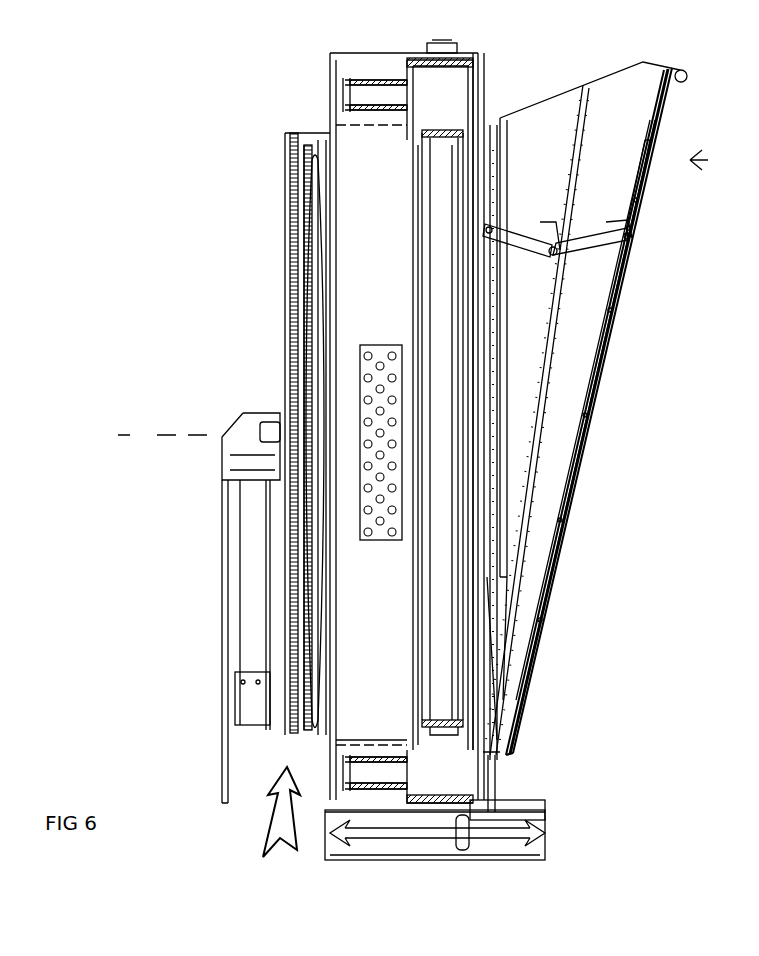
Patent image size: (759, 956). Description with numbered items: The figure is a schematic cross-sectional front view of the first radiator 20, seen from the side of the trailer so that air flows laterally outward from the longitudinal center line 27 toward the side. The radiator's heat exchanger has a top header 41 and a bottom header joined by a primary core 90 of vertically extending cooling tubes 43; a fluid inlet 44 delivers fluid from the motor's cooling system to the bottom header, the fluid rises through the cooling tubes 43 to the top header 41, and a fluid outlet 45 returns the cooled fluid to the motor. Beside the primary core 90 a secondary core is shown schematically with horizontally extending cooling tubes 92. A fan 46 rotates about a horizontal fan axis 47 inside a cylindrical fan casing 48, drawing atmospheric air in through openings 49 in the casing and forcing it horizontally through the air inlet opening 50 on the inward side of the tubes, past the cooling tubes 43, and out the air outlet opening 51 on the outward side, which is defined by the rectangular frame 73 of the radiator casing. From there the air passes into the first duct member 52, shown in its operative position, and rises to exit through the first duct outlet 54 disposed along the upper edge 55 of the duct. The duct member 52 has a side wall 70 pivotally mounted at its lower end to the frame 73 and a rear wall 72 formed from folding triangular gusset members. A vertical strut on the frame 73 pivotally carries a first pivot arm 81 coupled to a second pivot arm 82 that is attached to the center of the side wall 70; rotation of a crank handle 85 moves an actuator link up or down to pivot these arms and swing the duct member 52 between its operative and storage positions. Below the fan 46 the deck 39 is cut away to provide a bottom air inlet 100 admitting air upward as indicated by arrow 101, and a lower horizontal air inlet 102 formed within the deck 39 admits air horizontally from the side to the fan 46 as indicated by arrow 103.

The first radiator 20 is at (193, 91).
The longitudinal center line 27 is at (212, 790).
The deck 39 is at (517, 810).
The top header 41 is at (455, 87).
The cooling tubes 43 is at (413, 590).
The fluid inlet 44 is at (345, 762).
The fluid outlet 45 is at (343, 85).
The fan 46 is at (299, 336).
The fan axis 47 is at (170, 428).
The fan casing 48 is at (281, 167).
The openings 49 is at (292, 133).
The air inlet opening 50 is at (395, 221).
The air outlet opening 51 is at (498, 188).
The first duct member 52 is at (714, 161).
The first duct outlet 54 is at (588, 65).
The upper edge 55 is at (686, 70).
The side wall 70 is at (668, 128).
The rear wall 72 is at (555, 142).
The rectangular frame 73 is at (632, 118).
The first pivot arm 81 is at (548, 245).
The second pivot arm 82 is at (600, 246).
The crank handle 85 is at (462, 842).
The primary core 90 is at (417, 261).
The horizontally extending cooling tubes 92 is at (392, 335).
The bottom air inlet 100 is at (245, 812).
The arrow 101 is at (278, 828).
The lower horizontal air inlet 102 is at (525, 815).
The arrow 103 is at (520, 840).